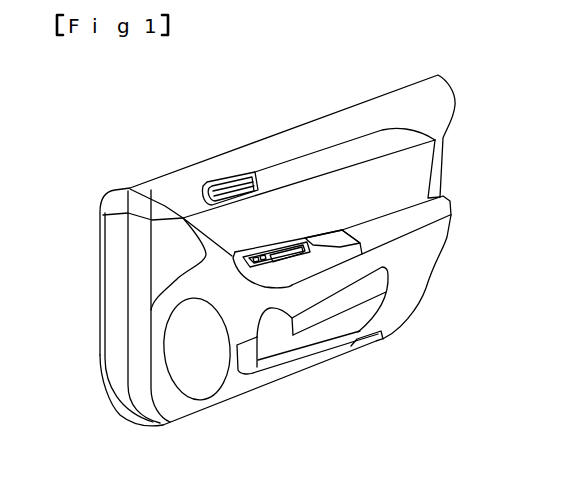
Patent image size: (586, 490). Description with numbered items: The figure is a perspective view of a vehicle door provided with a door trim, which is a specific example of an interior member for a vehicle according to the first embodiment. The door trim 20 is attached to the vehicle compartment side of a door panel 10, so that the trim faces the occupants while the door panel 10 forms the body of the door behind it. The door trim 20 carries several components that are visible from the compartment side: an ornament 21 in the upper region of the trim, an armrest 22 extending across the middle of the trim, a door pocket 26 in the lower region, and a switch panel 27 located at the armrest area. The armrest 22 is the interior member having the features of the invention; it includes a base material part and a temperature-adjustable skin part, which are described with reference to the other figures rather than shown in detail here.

The door panel 10 is at (100, 247).
The door trim 20 is at (398, 273).
The ornament 21 is at (402, 171).
The armrest 22 is at (414, 223).
The door pocket 26 is at (318, 334).
The switch panel 27 is at (277, 245).